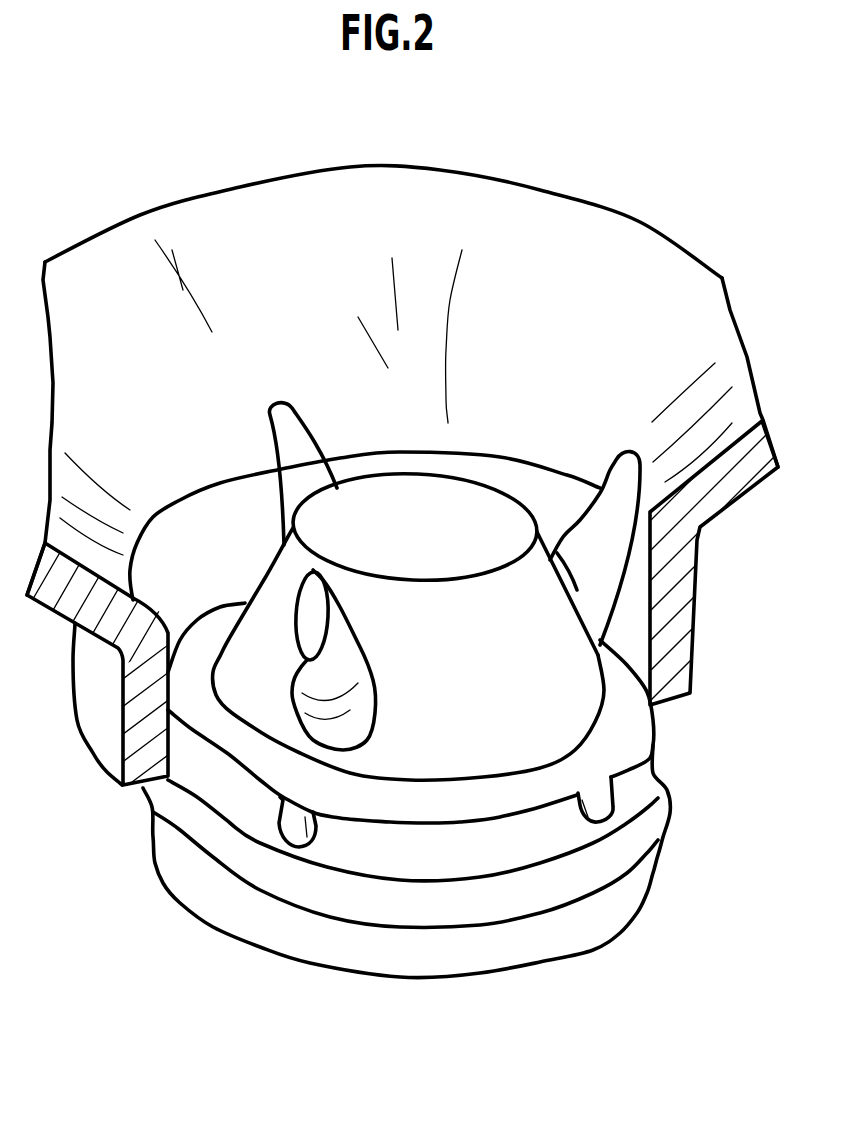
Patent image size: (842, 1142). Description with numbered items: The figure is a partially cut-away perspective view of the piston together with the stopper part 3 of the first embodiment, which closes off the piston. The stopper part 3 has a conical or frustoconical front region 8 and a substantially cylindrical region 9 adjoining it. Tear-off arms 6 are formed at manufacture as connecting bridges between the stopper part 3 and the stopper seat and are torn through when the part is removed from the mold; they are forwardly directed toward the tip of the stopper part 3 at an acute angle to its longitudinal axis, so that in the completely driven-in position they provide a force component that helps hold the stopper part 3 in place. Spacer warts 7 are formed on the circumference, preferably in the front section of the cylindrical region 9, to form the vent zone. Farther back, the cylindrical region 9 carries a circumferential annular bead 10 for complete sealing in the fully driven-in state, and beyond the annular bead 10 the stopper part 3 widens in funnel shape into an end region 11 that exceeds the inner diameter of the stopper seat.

The stopper part 3 is at (225, 965).
The tear-off arms 6 is at (299, 447).
The spacer warts 7 is at (290, 830).
The front region 8 is at (452, 627).
The cylindrical region 9 is at (405, 862).
The annular bead 10 is at (583, 855).
The end region 11 is at (565, 937).